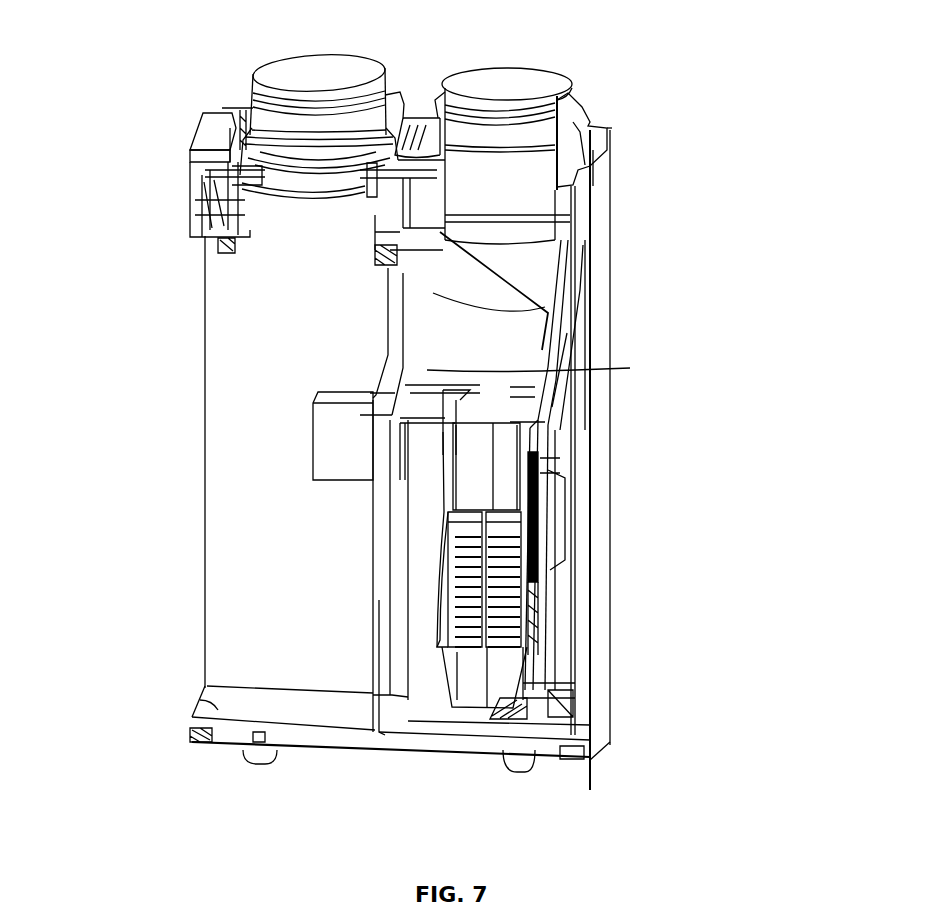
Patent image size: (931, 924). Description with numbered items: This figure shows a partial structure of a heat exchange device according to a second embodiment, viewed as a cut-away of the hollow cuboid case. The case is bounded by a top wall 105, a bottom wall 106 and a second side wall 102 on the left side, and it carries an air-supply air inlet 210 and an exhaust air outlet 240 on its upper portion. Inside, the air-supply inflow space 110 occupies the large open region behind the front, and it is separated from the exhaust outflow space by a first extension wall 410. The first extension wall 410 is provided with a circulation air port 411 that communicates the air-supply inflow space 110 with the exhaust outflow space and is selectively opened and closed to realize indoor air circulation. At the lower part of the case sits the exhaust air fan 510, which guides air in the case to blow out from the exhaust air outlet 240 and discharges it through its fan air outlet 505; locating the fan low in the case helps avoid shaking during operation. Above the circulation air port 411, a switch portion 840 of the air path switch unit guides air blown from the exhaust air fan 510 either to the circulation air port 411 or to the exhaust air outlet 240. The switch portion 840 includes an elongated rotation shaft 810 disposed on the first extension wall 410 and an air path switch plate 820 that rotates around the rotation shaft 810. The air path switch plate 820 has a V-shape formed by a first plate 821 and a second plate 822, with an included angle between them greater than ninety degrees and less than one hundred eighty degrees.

The second side wall 102 is at (600, 657).
The top wall 105 is at (200, 112).
The bottom wall 106 is at (220, 710).
The air-supply inflow space 110 is at (235, 378).
The air-supply air inlet 210 is at (298, 110).
The exhaust air outlet 240 is at (521, 126).
The first extension wall 410 is at (388, 289).
The circulation air port 411 is at (388, 355).
The fan air outlet 505 is at (548, 422).
The exhaust air fan 510 is at (547, 585).
The rotation shaft 810 is at (390, 262).
The air path switch plate 820 is at (594, 335).
The first plate 821 is at (545, 307).
The second plate 822 is at (630, 368).
The switch portion 840 is at (609, 311).